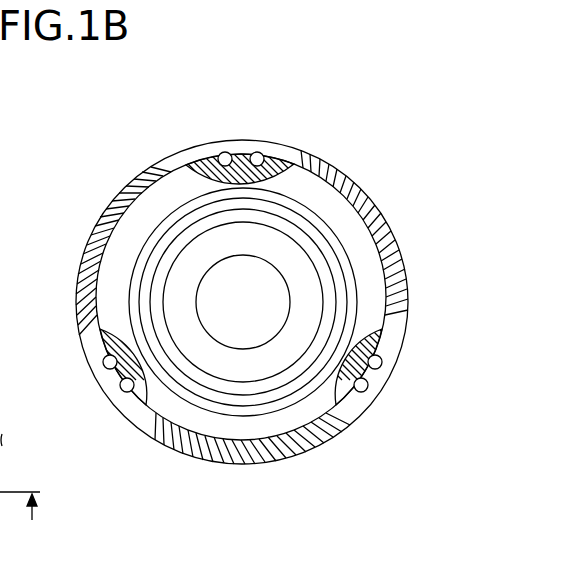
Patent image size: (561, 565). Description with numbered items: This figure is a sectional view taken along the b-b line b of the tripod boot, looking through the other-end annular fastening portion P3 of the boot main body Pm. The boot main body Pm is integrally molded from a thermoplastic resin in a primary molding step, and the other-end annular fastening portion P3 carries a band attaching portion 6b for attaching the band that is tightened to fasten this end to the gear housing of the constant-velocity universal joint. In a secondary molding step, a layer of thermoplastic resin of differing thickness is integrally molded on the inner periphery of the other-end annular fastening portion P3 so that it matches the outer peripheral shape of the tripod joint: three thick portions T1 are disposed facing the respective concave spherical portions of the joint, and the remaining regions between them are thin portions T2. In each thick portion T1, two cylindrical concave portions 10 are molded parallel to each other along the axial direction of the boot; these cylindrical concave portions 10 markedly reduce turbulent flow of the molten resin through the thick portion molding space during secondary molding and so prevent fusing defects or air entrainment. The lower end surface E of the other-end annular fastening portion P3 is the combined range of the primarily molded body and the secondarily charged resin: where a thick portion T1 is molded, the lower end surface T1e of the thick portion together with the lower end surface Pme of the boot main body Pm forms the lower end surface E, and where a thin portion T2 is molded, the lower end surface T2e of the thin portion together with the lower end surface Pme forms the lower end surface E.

The other-end annular fastening portion P3 is at (124, 157).
The boot main body Pm is at (182, 146).
The lower end surface of the boot main body Pme is at (371, 192).
The thin portion T2 is at (94, 253).
The lower end surface of the thin portion T2e is at (357, 172).
The thick portion T1 is at (286, 150).
The lower end surface of the thick portion T1e is at (361, 417).
The cylindrical concave portion 10 is at (224, 151).
The lower end surface E is at (416, 167).
The band attaching portion 6b is at (0, 466).
The b-b line b is at (20, 521).